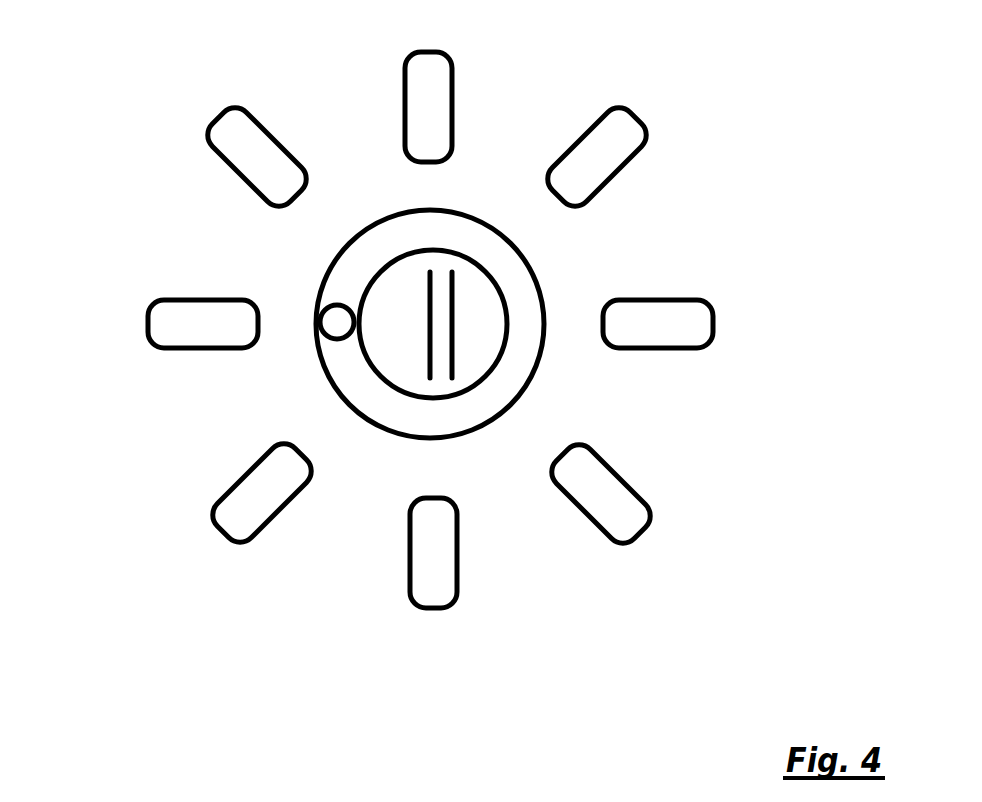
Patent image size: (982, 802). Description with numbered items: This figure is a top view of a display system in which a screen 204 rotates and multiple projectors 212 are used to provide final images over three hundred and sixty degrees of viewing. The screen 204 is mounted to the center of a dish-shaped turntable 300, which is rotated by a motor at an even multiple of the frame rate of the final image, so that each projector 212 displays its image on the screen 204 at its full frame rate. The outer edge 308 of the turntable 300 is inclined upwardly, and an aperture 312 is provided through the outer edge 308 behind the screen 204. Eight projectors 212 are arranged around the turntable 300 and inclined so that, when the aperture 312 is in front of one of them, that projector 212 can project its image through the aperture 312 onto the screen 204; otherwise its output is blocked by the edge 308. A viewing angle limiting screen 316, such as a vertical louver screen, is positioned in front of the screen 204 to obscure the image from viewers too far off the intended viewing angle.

The projectors 212 is at (464, 61).
The dish-shaped turntable 300 is at (433, 347).
The outer edge 308 is at (307, 364).
The aperture 312 is at (310, 305).
The screen 204 is at (413, 338).
The viewing angle limiting screen 316 is at (470, 334).